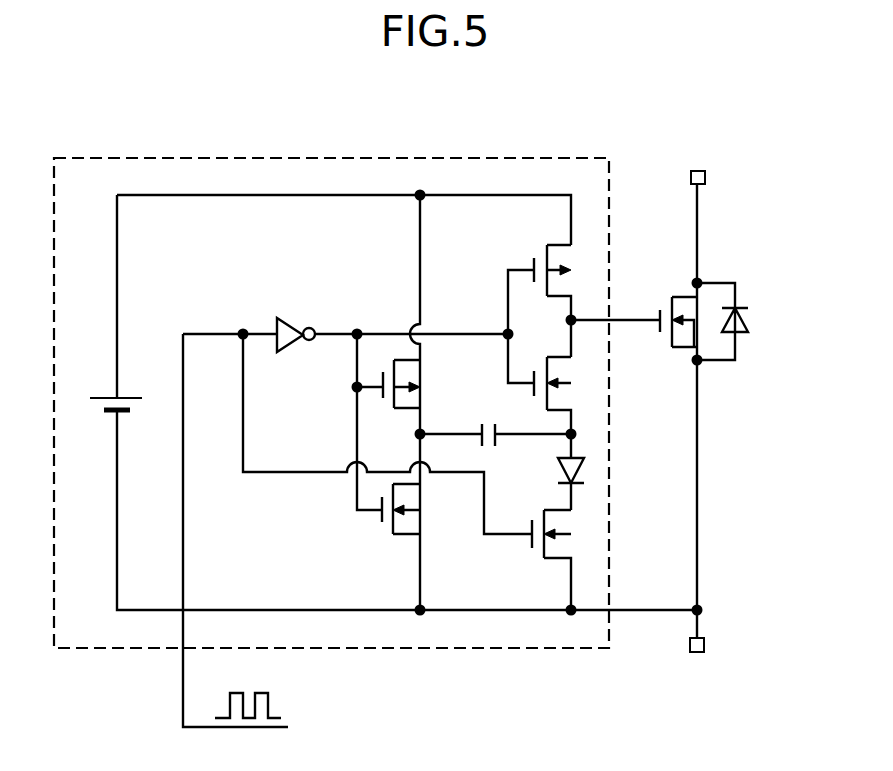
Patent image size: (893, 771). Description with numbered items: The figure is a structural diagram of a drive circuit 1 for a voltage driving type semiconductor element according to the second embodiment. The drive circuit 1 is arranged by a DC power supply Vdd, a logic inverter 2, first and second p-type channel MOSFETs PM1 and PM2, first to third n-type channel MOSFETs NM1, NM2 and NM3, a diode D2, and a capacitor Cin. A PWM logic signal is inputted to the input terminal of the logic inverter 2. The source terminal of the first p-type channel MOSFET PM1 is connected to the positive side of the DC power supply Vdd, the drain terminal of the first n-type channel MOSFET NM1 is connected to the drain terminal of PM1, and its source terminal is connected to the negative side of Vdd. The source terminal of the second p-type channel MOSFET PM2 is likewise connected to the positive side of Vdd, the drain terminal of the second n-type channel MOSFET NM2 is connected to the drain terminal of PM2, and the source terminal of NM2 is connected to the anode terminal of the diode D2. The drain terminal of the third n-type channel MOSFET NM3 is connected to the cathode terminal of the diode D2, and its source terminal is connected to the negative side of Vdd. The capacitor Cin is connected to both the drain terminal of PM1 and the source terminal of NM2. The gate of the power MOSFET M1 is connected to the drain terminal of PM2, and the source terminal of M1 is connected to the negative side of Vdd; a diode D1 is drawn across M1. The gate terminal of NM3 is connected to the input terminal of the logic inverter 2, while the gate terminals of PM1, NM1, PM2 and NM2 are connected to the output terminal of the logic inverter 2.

The drive circuit 1 is at (100, 158).
The logic inverter 2 is at (280, 320).
The first p-type channel MOSFET PM1 is at (427, 384).
The second p-type channel MOSFET PM2 is at (567, 301).
The first n-type channel MOSFET NM1 is at (429, 509).
The second n-type channel MOSFET NM2 is at (569, 384).
The third n-type channel MOSFET NM3 is at (581, 560).
The power MOSFET M1 is at (673, 313).
The body diode D1 is at (750, 320).
The diode D2 is at (551, 472).
The capacitor Cin is at (495, 420).
The DC power supply Vdd is at (103, 390).